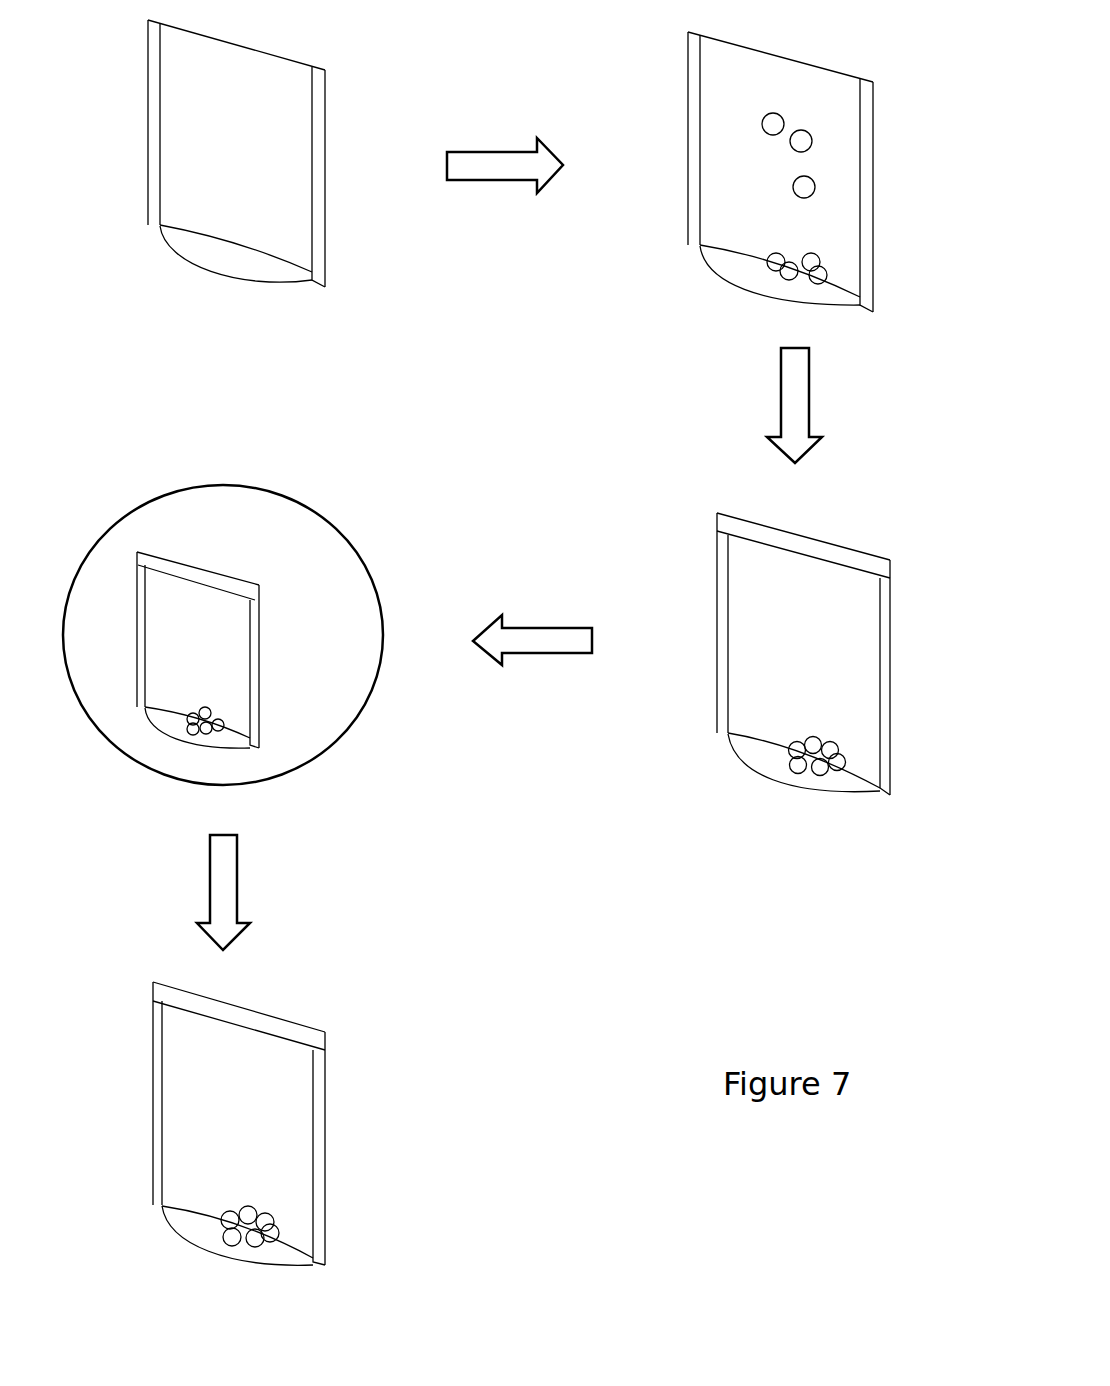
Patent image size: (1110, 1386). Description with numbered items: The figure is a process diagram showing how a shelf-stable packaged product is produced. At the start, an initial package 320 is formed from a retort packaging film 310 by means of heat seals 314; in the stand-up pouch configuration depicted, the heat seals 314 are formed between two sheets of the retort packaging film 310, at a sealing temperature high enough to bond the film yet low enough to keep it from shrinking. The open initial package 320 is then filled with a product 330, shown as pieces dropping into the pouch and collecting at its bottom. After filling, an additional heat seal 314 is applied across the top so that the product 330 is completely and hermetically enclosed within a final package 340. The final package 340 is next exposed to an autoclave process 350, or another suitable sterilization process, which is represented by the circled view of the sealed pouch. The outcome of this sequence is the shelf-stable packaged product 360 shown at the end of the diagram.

The retort packaging film 310 is at (253, 166).
The heat seal 314 is at (155, 140).
The initial package 320 is at (306, 50).
The product 330 is at (812, 143).
The final package 340 is at (859, 540).
The autoclave process 350 is at (357, 734).
The shelf-stable packaged product 360 is at (344, 1073).